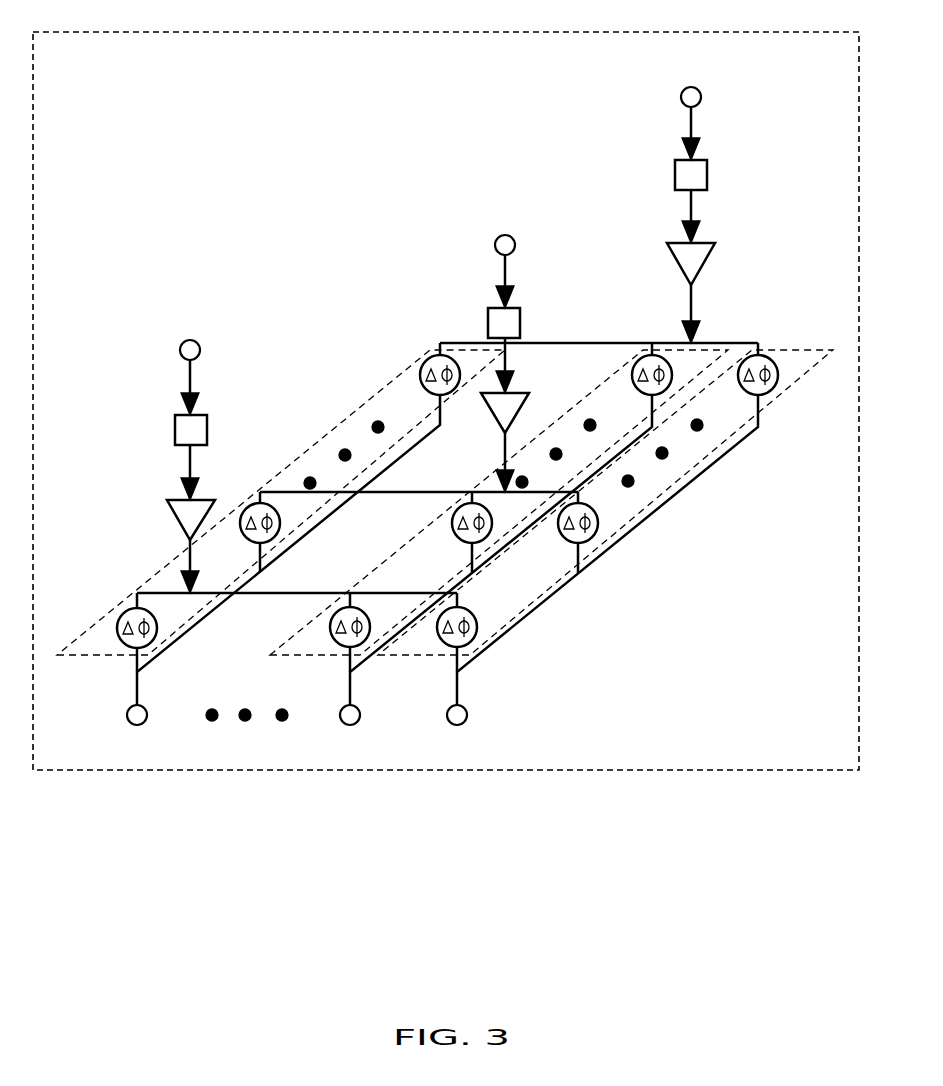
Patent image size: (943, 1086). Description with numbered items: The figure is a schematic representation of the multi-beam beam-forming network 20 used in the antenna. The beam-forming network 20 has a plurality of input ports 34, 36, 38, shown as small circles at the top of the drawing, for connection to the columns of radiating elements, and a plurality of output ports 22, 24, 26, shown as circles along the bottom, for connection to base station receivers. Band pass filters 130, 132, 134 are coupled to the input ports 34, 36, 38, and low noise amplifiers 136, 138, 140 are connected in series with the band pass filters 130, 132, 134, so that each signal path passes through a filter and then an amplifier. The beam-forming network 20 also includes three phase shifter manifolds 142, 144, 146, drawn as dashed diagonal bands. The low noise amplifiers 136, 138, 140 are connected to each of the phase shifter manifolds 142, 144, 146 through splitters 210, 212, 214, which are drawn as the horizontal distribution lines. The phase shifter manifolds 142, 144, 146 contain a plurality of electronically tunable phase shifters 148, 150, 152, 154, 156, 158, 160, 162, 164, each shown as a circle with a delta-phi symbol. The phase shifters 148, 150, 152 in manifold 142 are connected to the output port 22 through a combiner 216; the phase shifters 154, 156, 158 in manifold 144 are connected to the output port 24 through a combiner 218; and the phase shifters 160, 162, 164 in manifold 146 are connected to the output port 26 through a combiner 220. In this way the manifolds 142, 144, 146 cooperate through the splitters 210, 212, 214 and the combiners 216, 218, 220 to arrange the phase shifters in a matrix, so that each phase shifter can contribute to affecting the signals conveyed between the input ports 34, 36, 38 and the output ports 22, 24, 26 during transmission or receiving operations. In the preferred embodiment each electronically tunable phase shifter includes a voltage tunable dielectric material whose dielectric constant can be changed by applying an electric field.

The multi-beam beam-forming network 20 is at (440, 32).
The output port 22 is at (146, 723).
The output port 24 is at (357, 723).
The output port 26 is at (464, 723).
The input port 34 is at (179, 345).
The input port 36 is at (493, 242).
The input port 38 is at (680, 92).
The band pass filter 130 is at (177, 414).
The band pass filter 132 is at (491, 307).
The band pass filter 134 is at (678, 159).
The low noise amplifier 136 is at (177, 499).
The low noise amplifier 138 is at (514, 392).
The low noise amplifier 140 is at (678, 243).
The phase shifter manifold 142 is at (342, 422).
The phase shifter manifold 144 is at (405, 528).
The phase shifter manifold 146 is at (796, 350).
The electronically tunable phase shifter 148 is at (160, 610).
The electronically tunable phase shifter 150 is at (282, 506).
The electronically tunable phase shifter 152 is at (430, 394).
The electronically tunable phase shifter 154 is at (372, 610).
The electronically tunable phase shifter 156 is at (495, 506).
The electronically tunable phase shifter 158 is at (642, 394).
The electronically tunable phase shifter 160 is at (478, 610).
The electronically tunable phase shifter 162 is at (595, 511).
The electronically tunable phase shifter 164 is at (750, 396).
The splitter 210 is at (284, 593).
The splitter 212 is at (407, 492).
The splitter 214 is at (726, 343).
The combiner 216 is at (150, 668).
The combiner 218 is at (362, 668).
The combiner 220 is at (469, 668).